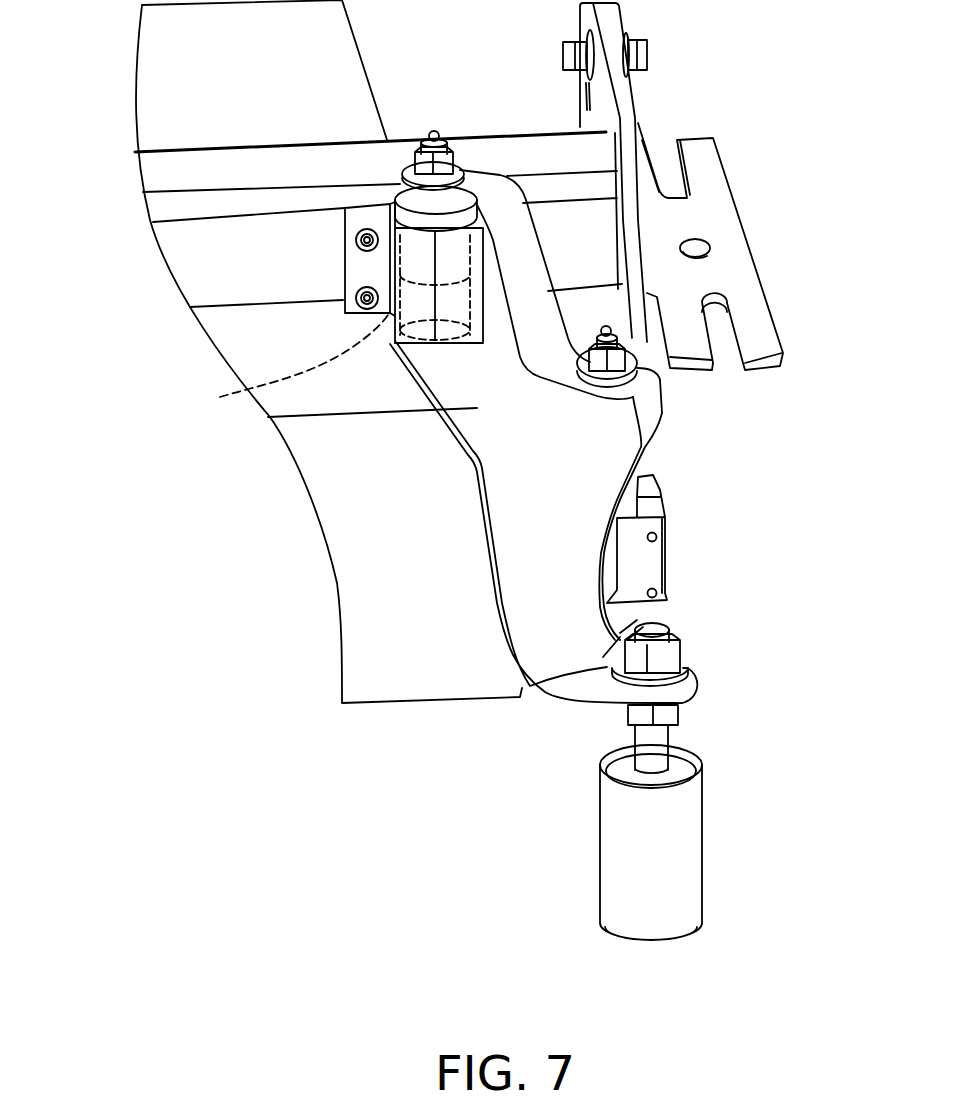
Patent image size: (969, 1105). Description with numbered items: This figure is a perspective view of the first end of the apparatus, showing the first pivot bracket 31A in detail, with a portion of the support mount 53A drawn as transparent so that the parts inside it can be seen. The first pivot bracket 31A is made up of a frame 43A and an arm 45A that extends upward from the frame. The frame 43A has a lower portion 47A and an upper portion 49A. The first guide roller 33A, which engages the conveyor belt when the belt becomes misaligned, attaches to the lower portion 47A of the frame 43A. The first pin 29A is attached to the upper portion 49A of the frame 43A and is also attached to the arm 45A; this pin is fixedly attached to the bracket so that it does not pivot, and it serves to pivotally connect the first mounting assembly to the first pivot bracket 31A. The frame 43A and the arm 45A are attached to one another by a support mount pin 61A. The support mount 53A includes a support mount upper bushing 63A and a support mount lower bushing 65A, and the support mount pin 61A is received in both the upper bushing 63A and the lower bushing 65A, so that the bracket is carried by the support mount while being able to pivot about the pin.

The first pin 29A is at (637, 482).
The first pivot bracket 31A is at (538, 387).
The first guide roller 33A is at (680, 843).
The frame 43A is at (645, 442).
The arm 45A is at (563, 305).
The lower portion 47A is at (578, 613).
The upper portion 49A is at (477, 408).
The support mount 53A is at (343, 249).
The support mount pin 61A is at (488, 234).
The support mount upper bushing 63A is at (390, 312).
The support mount lower bushing 65A is at (278, 363).